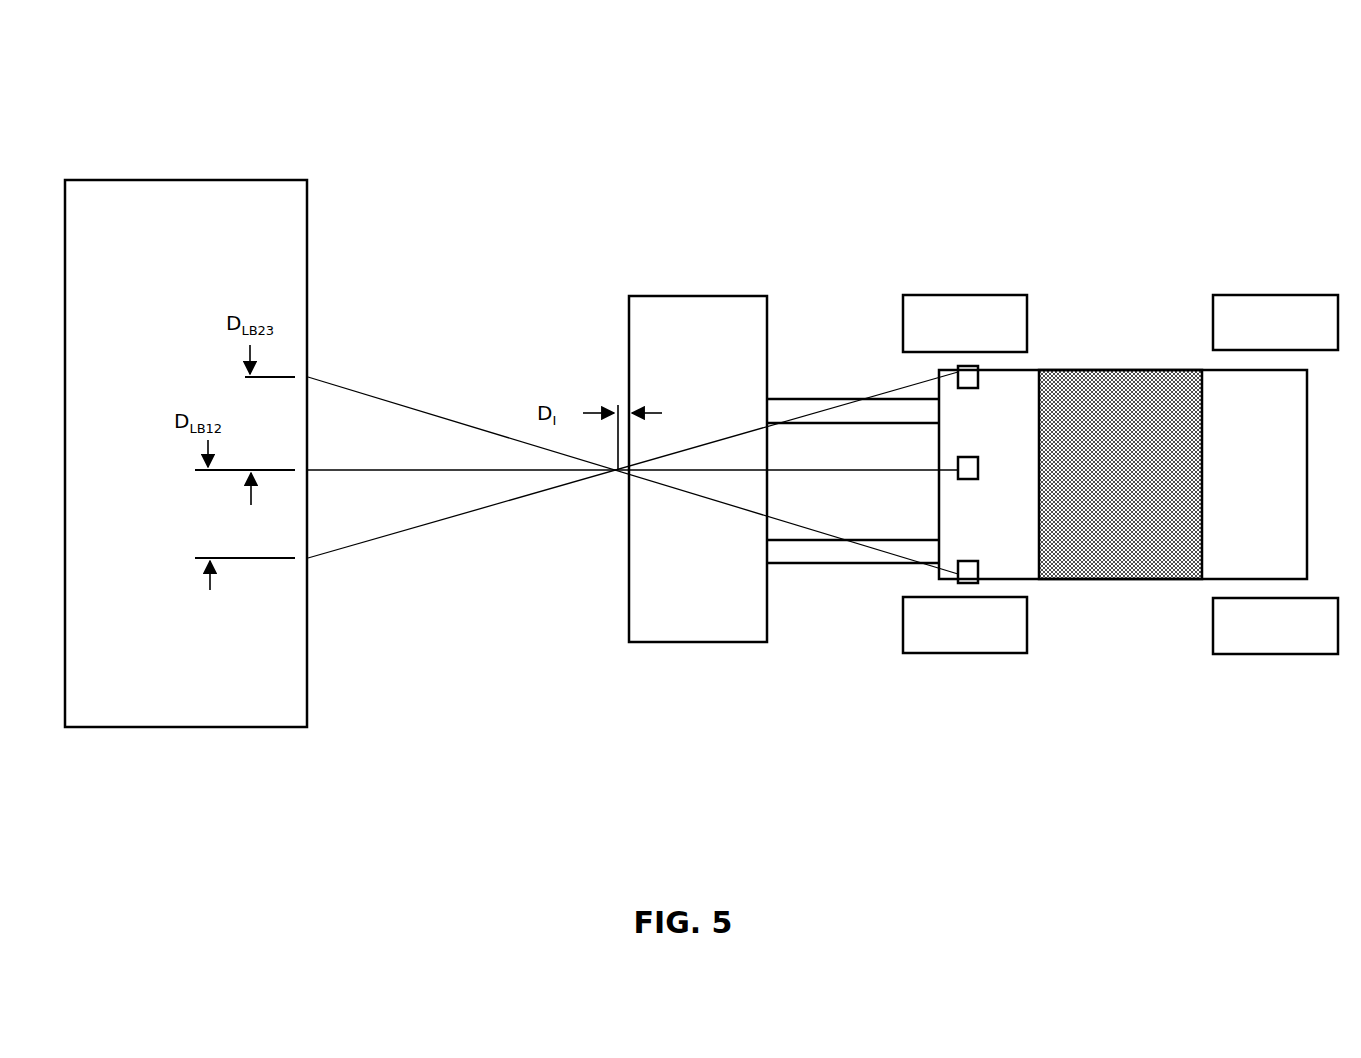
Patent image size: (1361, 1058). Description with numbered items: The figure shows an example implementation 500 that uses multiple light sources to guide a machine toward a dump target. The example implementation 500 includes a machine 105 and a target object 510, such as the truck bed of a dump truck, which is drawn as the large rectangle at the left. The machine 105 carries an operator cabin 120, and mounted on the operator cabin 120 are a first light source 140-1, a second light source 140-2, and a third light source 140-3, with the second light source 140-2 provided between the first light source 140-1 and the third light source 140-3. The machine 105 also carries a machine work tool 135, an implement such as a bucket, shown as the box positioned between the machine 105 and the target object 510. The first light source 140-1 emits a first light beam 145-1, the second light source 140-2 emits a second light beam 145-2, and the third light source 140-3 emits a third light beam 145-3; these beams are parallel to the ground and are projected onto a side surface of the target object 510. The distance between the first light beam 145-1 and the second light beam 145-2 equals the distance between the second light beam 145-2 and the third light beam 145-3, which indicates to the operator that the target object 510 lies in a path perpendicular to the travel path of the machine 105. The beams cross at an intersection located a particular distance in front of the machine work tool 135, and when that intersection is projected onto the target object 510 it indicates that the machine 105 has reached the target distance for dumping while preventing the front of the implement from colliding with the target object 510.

The example implementation 500 is at (195, 40).
The target object 510 is at (252, 200).
The machine work tool 135 is at (667, 312).
The machine 105 is at (928, 238).
The operator cabin 120 is at (1030, 405).
The first light source 140-1 is at (965, 370).
The second light source 140-2 is at (982, 482).
The third light source 140-3 is at (982, 583).
The first light beam 145-1 is at (357, 540).
The second light beam 145-2 is at (410, 465).
The third light beam 145-3 is at (465, 425).